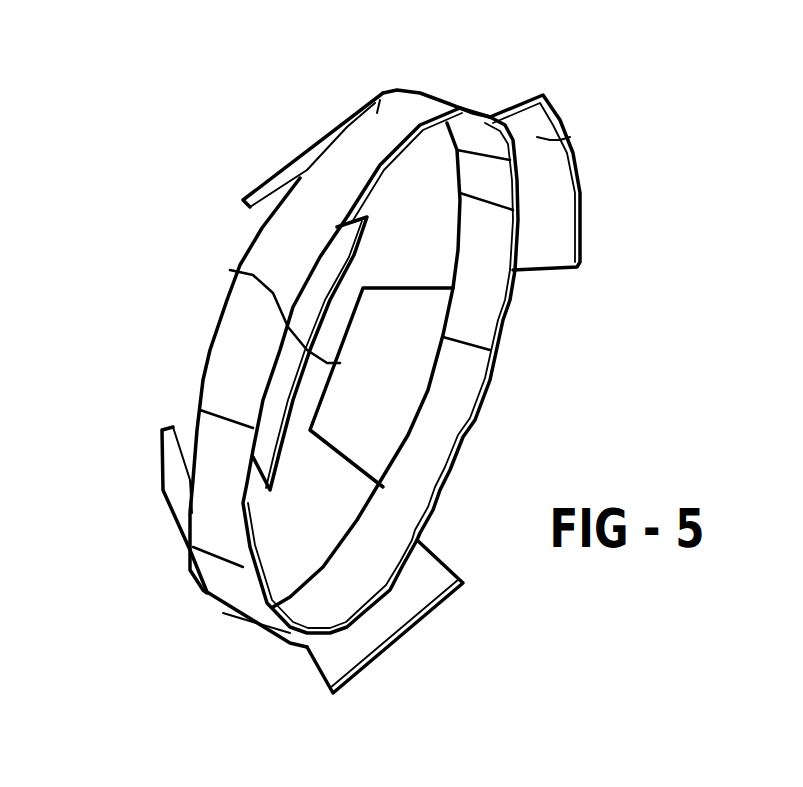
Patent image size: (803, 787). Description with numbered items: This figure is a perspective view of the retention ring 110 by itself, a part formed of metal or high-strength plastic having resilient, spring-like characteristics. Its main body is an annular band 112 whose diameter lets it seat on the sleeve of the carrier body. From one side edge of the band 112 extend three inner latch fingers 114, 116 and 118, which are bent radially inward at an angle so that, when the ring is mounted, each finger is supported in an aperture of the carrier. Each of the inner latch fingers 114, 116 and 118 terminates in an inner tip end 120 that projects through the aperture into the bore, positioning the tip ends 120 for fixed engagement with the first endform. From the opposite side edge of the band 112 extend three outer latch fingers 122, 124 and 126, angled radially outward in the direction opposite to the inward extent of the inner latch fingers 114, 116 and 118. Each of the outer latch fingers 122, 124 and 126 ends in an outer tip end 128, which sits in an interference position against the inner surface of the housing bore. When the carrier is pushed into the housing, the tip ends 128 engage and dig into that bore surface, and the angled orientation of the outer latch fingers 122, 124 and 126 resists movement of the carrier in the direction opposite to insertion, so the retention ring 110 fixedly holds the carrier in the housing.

The retention ring 110 is at (354, 316).
The annular band 112 is at (412, 71).
The inner latch finger 114 is at (300, 139).
The inner latch finger 116 is at (175, 537).
The inner latch finger 118 is at (435, 387).
The inner tip end 120 is at (151, 278).
The outer latch finger 122 is at (585, 172).
The outer latch finger 124 is at (414, 616).
The outer latch finger 126 is at (236, 327).
The outer tip end 128 is at (459, 451).